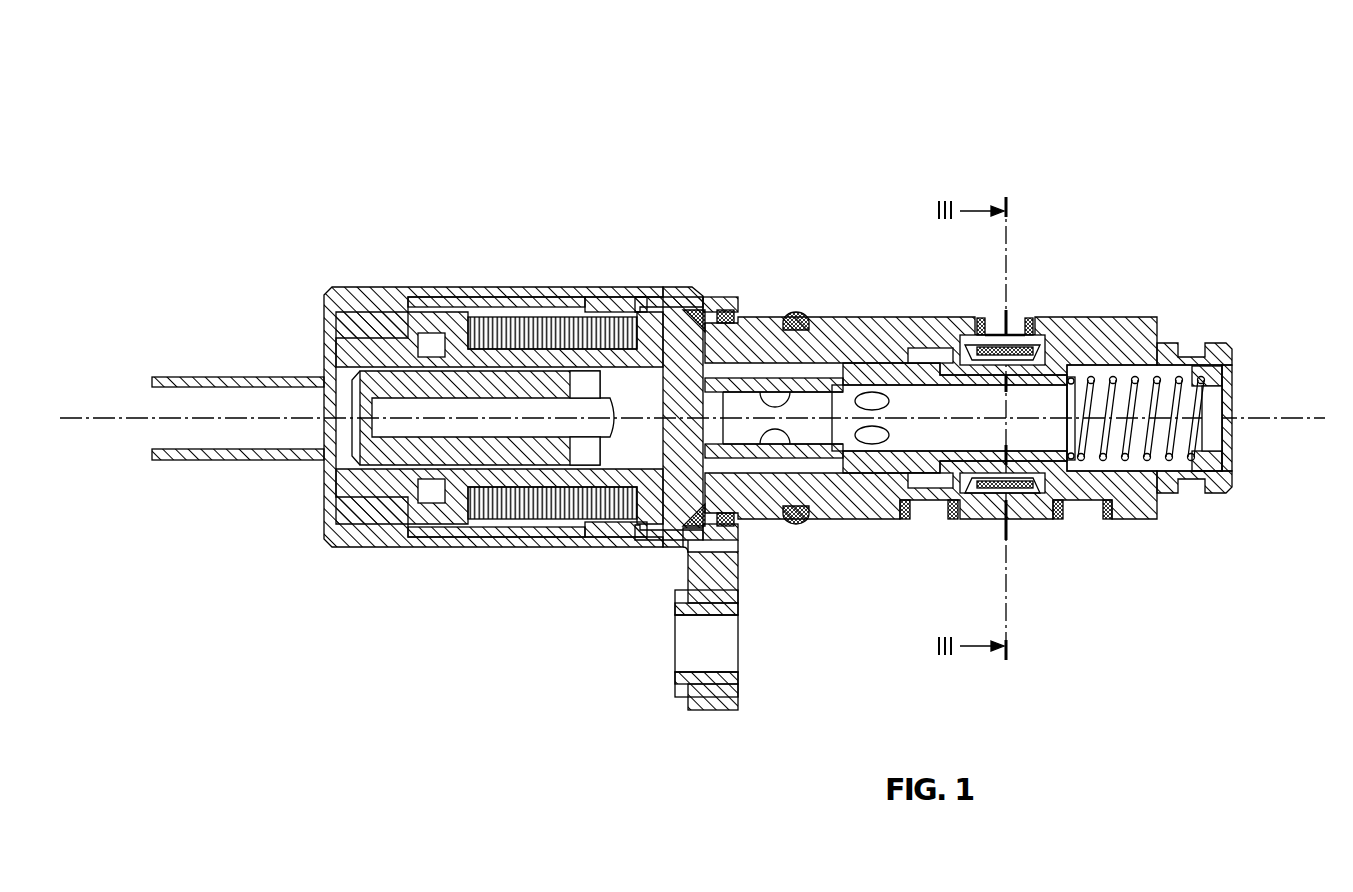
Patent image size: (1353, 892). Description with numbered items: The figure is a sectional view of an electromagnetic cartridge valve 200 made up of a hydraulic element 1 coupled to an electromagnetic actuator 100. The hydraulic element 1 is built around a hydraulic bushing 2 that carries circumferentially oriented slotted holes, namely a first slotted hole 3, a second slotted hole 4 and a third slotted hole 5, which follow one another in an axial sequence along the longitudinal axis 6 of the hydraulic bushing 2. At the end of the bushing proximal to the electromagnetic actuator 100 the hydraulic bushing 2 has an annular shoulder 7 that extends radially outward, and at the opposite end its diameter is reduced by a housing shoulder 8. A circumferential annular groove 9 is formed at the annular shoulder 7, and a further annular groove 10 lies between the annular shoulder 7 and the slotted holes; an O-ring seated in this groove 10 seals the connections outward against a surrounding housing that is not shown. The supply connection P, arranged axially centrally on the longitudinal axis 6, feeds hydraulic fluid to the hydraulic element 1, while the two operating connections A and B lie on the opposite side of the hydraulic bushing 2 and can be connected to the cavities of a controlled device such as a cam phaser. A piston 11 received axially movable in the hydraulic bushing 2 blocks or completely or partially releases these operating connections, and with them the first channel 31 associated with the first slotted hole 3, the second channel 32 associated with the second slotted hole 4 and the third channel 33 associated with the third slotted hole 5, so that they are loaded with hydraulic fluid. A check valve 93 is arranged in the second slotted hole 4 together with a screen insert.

The electromagnetic actuator 100 is at (466, 245).
The electromagnetic cartridge valve 200 is at (1222, 199).
The hydraulic element 1 is at (1088, 269).
The hydraulic bushing 2 is at (846, 305).
The first slotted hole 3 is at (920, 520).
The first channel 31 is at (935, 520).
The second channel 32 is at (990, 330).
The second slotted hole 4 is at (1020, 325).
The third slotted hole 5 is at (1075, 520).
The third channel 33 is at (1085, 520).
The longitudinal axis 6 is at (1306, 408).
The annular shoulder 7 is at (708, 312).
The housing shoulder 8 is at (1160, 335).
The circumferential annular groove 9 is at (727, 313).
The additional annular groove 10 is at (790, 312).
The piston 11 is at (881, 346).
The check valve 93 is at (1010, 510).